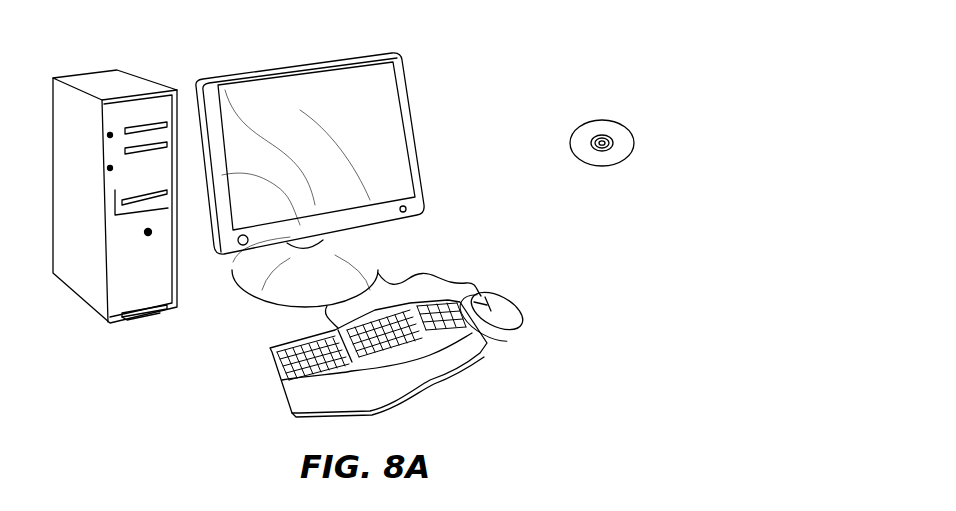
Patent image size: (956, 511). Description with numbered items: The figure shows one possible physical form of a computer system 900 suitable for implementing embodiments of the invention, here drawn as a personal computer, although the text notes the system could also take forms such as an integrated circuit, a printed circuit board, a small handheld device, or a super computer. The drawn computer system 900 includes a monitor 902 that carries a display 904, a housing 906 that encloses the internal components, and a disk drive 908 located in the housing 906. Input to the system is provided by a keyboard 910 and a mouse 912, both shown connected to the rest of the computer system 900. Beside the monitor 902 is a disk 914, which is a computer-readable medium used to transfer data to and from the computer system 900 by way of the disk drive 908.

The computer system 900 is at (527, 38).
The monitor 902 is at (418, 150).
The display 904 is at (380, 88).
The housing 906 is at (103, 82).
The disk drive 908 is at (157, 193).
The keyboard 910 is at (285, 383).
The mouse 912 is at (522, 310).
The disk 914 is at (618, 120).